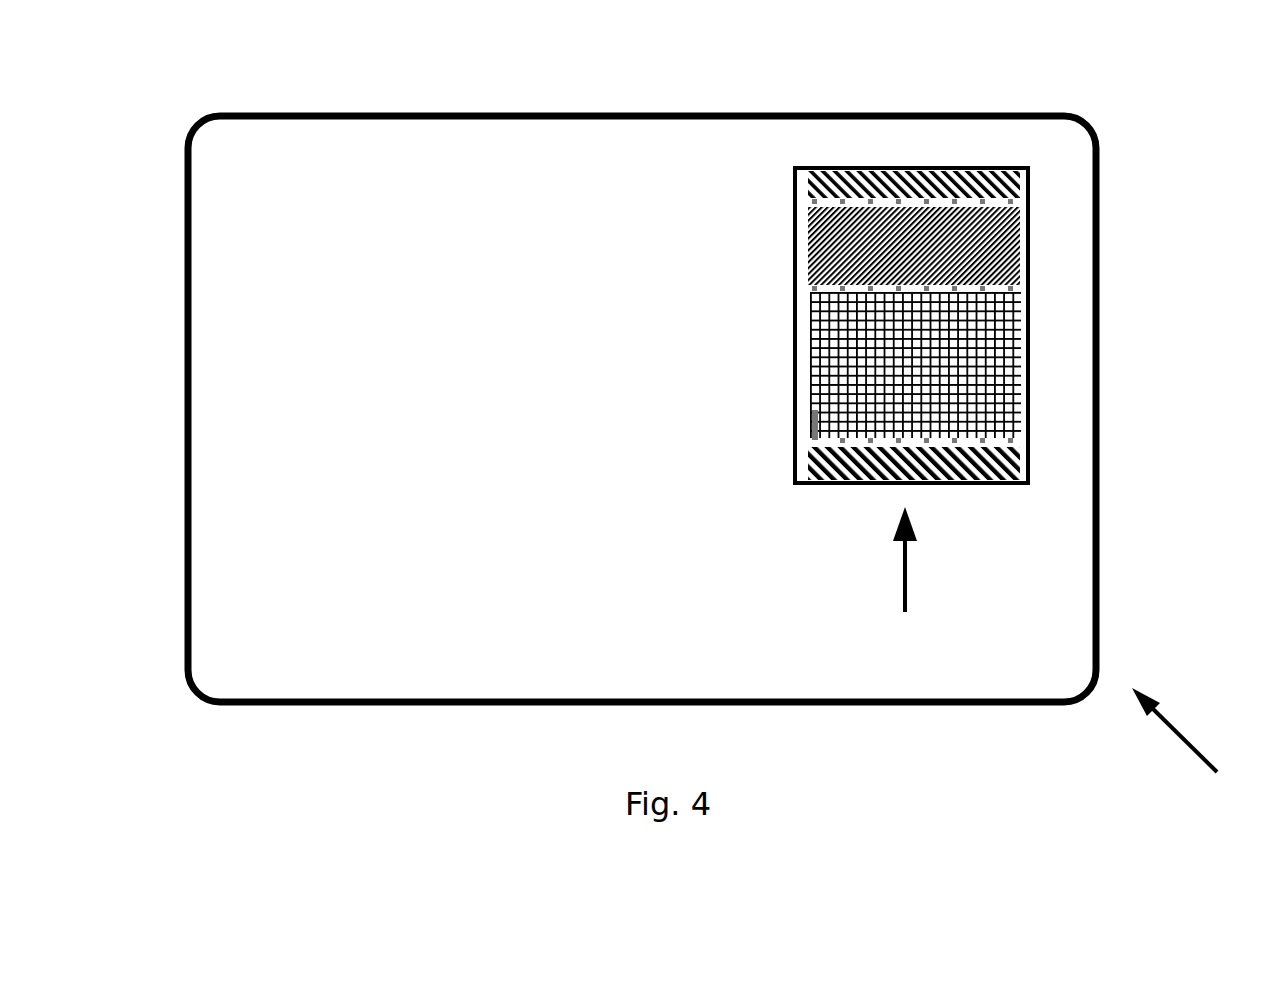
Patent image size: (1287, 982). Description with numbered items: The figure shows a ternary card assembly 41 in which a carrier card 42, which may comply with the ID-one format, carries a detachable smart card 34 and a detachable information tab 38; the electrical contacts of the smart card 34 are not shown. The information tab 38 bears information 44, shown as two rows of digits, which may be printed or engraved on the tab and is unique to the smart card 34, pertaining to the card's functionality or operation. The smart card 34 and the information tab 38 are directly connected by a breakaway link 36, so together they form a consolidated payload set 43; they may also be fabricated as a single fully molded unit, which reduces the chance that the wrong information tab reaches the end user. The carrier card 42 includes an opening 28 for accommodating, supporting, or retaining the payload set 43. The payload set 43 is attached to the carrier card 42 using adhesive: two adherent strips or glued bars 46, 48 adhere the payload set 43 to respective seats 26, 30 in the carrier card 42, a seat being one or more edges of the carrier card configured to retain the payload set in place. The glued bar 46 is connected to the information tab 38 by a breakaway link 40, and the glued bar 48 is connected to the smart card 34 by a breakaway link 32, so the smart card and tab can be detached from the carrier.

The seat 26 is at (878, 167).
The opening 28 is at (803, 430).
The seat 30 is at (970, 485).
The breakaway link 32 is at (852, 485).
The detachable smart card 34 is at (813, 377).
The breakaway link 36 is at (805, 316).
The detachable information tab 38 is at (808, 232).
The breakaway link 40 is at (812, 198).
The ternary card assembly 41 is at (1194, 747).
The carrier card 42 is at (387, 660).
The consolidated payload set 43 is at (908, 584).
The information 44 is at (963, 235).
The glued bar 46 is at (993, 180).
The glued bar 48 is at (1032, 457).